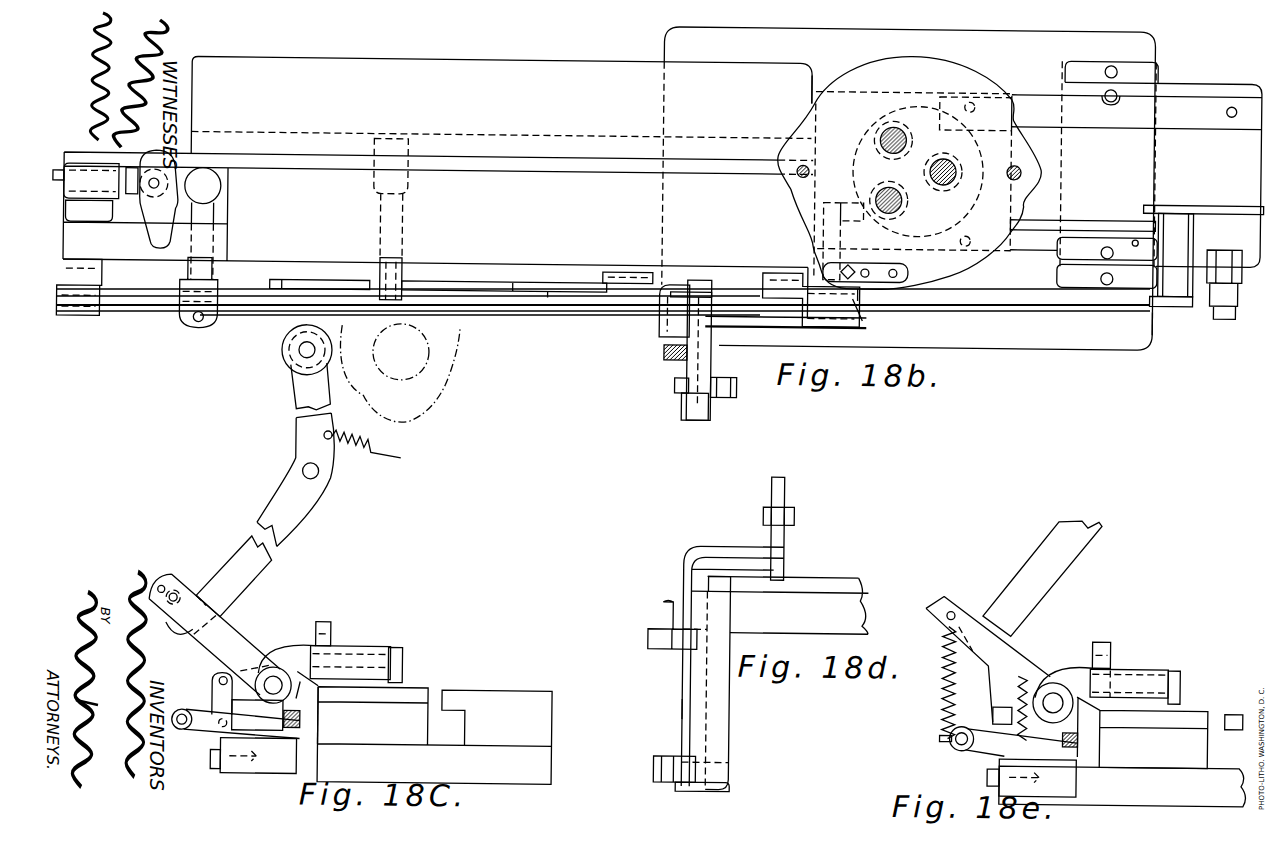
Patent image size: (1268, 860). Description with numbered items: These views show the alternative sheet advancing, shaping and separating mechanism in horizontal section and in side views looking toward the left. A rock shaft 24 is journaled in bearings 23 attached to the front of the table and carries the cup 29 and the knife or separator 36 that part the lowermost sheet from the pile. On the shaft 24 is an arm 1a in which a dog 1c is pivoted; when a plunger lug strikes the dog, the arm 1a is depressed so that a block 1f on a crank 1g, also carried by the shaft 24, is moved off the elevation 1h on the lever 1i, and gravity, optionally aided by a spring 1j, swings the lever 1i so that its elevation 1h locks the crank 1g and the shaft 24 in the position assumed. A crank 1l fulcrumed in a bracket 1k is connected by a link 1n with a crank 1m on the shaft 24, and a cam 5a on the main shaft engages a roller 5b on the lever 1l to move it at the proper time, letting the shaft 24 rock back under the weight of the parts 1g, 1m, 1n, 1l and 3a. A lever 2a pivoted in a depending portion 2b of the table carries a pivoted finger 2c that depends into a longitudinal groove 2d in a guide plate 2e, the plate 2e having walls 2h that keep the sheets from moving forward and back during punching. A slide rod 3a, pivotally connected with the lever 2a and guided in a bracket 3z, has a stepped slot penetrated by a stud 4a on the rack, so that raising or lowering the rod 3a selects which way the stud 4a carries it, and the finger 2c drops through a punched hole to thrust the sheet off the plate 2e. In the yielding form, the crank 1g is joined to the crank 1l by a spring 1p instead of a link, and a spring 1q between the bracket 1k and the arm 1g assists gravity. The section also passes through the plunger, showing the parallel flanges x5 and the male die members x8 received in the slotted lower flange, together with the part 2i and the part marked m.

In FIG. 18B, the cup 29 is at (220, 185).
In FIG. 18B, the knife or separator 36 is at (137, 220).
In FIG. 18B, the stud 4a is at (408, 254).
In FIG. 18B, the slide rod 3a is at (492, 286).
In FIG. 18C, the slide rod 3a is at (295, 729).
In FIG. 18E, the slide rod 3a is at (1080, 740).
In FIG. 18B, the rock shaft 24 is at (548, 292).
In FIG. 18C, the rock shaft 24 is at (273, 690).
In FIG. 18B, the bracket 3z is at (613, 277).
In FIG. 18B, the crank 1m is at (675, 320).
In FIG. 18C, the crank 1m is at (280, 727).
In FIG. 18B, the link 1n is at (670, 349).
In FIG. 18C, the link 1n is at (217, 707).
In FIG. 18B, the crank 1l is at (681, 365).
In FIG. 18C, the crank 1l is at (260, 732).
In FIG. 18E, the crank 1l is at (1047, 750).
In FIG. 18B, the block 1f is at (686, 404).
In FIG. 18C, the block 1f is at (185, 578).
In FIG. 18B, the crank 1g is at (710, 404).
In FIG. 18C, the crank 1g is at (225, 630).
In FIG. 18E, the crank 1g is at (1013, 657).
In FIG. 18B, the bracket 1k is at (726, 360).
In FIG. 18C, the bracket 1k is at (210, 737).
In FIG. 18E, the bracket 1k is at (967, 763).
In FIG. 18B, the bearings 23 is at (778, 314).
In FIG. 18C, the bearings 23 is at (312, 728).
In FIG. 18B, the arm 1a is at (873, 292).
In FIG. 18C, the arm 1a is at (337, 647).
In FIG. 18E, the arm 1a is at (1137, 668).
In FIG. 18B, the dog 1c is at (800, 230).
In FIG. 18C, the dog 1c is at (330, 640).
In FIG. 18E, the dog 1c is at (1108, 657).
In FIG. 18B, the roller 5b is at (288, 353).
In FIG. 18B, the cam 5a is at (443, 382).
In FIG. 18B, the spring 1j is at (329, 480).
In FIG. 18B, the male die members x8 is at (943, 173).
In FIG. 18B, the pin 2i is at (1011, 157).
In FIG. 18B, the parallel flanges x5 is at (965, 257).
In FIG. 18B, the walls 2h is at (1097, 205).
In FIG. 18B, the guide plate 2e is at (1136, 164).
In FIG. 18D, the guide plate 2e is at (847, 585).
In FIG. 18B, the finger 2c is at (1207, 194).
In FIG. 18D, the finger 2c is at (777, 560).
In FIG. 18B, the longitudinal groove 2d is at (1240, 212).
In FIG. 18D, the longitudinal groove 2d is at (773, 580).
In FIG. 18B, the lever 2a is at (1172, 267).
In FIG. 18D, the lever 2a is at (675, 708).
In FIG. 18B, the base plate m is at (1047, 331).
In FIG. 18D, the base plate m is at (877, 583).
In FIG. 18C, the lever 1i is at (255, 572).
In FIG. 18E, the lever 1i is at (1023, 605).
In FIG. 18C, the elevation 1h is at (168, 623).
In FIG. 18E, the spring 1q is at (940, 692).
In FIG. 18E, the spring 1p is at (1147, 737).
In FIG. 18D, the depending portion 2b is at (722, 717).